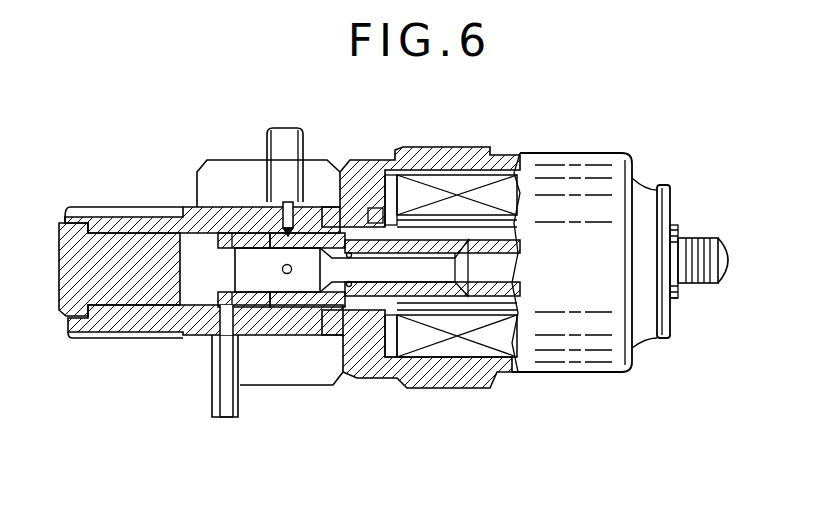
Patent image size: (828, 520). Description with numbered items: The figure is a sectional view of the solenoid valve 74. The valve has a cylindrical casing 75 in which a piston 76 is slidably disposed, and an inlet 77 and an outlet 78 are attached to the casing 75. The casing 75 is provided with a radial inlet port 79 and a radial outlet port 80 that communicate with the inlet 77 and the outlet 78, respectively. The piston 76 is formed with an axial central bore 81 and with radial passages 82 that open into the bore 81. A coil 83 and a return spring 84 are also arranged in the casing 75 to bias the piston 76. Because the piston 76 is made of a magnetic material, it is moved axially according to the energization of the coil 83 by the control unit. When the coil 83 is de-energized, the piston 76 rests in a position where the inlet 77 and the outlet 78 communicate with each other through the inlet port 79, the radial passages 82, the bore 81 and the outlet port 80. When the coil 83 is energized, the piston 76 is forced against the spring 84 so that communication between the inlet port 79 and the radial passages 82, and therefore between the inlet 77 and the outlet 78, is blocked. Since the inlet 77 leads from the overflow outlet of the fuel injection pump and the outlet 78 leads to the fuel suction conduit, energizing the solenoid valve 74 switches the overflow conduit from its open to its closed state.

The solenoid valve 74 is at (476, 106).
The cylindrical casing 75 is at (362, 192).
The piston 76 is at (256, 340).
The inlet 77 is at (288, 150).
The outlet 78 is at (236, 418).
The inlet port 79 is at (282, 235).
The outlet port 80 is at (211, 347).
The axial central bore 81 is at (313, 288).
The radial passages 82 is at (243, 232).
The coil 83 is at (487, 345).
The return spring 84 is at (352, 287).